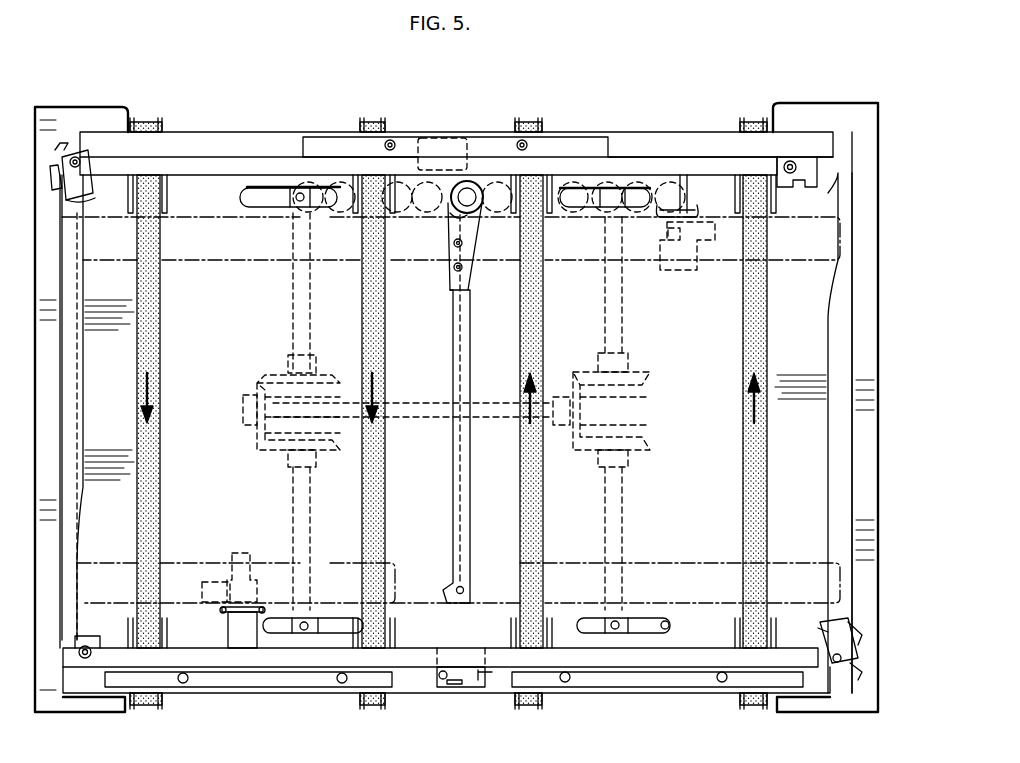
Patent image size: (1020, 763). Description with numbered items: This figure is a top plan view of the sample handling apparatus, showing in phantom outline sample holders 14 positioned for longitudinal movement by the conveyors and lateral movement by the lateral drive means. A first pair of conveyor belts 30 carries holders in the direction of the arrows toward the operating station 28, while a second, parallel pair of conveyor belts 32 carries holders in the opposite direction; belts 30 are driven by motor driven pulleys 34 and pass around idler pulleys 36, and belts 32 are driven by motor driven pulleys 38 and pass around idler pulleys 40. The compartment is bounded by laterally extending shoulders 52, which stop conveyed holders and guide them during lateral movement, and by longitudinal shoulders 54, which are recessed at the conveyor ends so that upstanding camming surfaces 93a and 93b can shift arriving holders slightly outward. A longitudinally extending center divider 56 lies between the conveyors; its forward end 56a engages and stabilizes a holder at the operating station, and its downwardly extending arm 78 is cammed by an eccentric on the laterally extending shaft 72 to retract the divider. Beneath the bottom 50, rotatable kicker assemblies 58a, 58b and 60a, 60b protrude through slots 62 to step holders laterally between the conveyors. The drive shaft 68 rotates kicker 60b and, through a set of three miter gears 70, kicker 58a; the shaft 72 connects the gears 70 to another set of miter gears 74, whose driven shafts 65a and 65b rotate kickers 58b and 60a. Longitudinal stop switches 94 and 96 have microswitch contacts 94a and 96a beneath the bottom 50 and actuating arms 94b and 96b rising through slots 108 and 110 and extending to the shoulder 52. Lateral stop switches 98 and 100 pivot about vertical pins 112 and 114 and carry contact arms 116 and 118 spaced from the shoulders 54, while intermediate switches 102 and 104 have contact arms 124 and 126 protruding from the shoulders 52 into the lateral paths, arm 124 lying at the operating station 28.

The sample holder 14 is at (323, 217).
The operating station 28 is at (472, 193).
The conveyor belts 30 is at (543, 528).
The conveyor belts 32 is at (160, 283).
The motor driven pulleys 34 is at (545, 708).
The idler pulleys 36 is at (545, 127).
The motor driven pulleys 38 is at (163, 705).
The idler pulleys 40 is at (165, 128).
The bottom 50 is at (807, 455).
The lateral shoulders 52 is at (650, 160).
The longitudinal shoulders 54 is at (78, 395).
The center divider 56 is at (465, 472).
The forward end 56a is at (450, 238).
The kicker assembly 58a is at (615, 185).
The kicker assembly 58b is at (300, 182).
The kicker assembly 60a is at (304, 632).
The kicker assembly 60b is at (615, 632).
The slots 62 is at (270, 210).
The driven shaft 65a is at (293, 322).
The driven shaft 65b is at (293, 496).
The drive shaft 68 is at (620, 325).
The miter gears 70 is at (620, 412).
The laterally extending shaft 72 is at (400, 403).
The miter gears 74 is at (248, 440).
The downwardly extending arm 78 is at (458, 420).
The camming surface 93a is at (473, 218).
The camming surface 93b is at (455, 598).
The longitudinal stop switch 94 is at (690, 248).
The microswitch contact 94a is at (670, 245).
The actuating arm 94b is at (690, 180).
The longitudinal stop switch 96 is at (208, 582).
The contact 96a is at (243, 560).
The actuating arm 96b is at (243, 650).
The lateral stop switch 98 is at (63, 160).
The lateral stop switch 100 is at (843, 665).
The intermediate switch 102 is at (425, 138).
The intermediate switch 104 is at (440, 678).
The slot 108 is at (692, 208).
The slot 110 is at (222, 612).
The vertical pin 112 is at (77, 158).
The vertical pin 114 is at (838, 664).
The contact arm 116 is at (92, 200).
The contact arm 118 is at (820, 628).
The contact arm 124 is at (460, 195).
The contact arm 126 is at (448, 645).